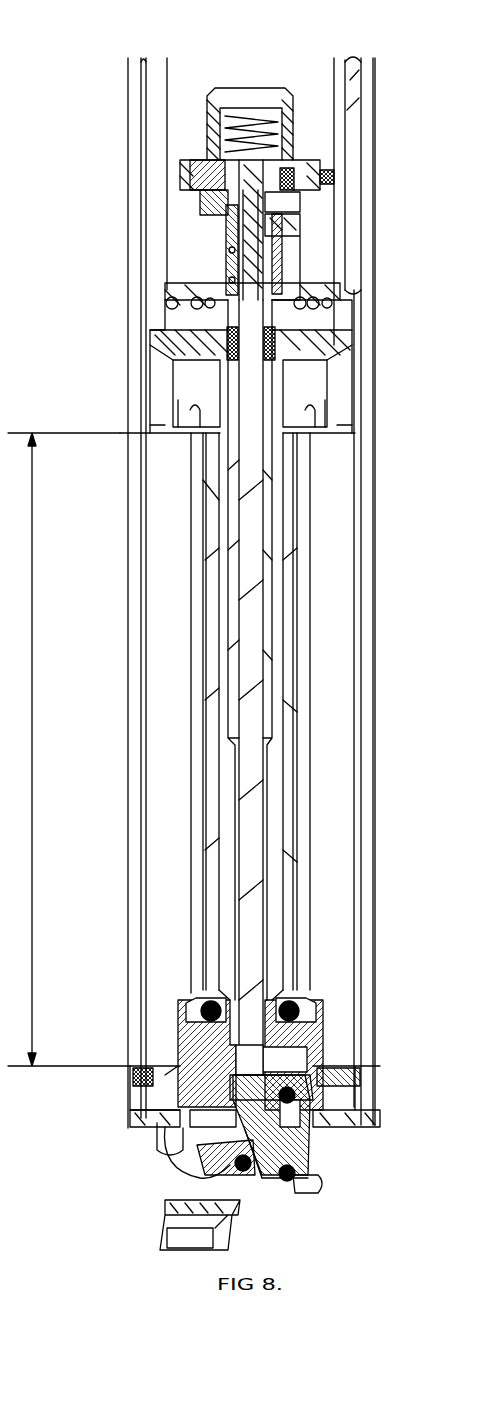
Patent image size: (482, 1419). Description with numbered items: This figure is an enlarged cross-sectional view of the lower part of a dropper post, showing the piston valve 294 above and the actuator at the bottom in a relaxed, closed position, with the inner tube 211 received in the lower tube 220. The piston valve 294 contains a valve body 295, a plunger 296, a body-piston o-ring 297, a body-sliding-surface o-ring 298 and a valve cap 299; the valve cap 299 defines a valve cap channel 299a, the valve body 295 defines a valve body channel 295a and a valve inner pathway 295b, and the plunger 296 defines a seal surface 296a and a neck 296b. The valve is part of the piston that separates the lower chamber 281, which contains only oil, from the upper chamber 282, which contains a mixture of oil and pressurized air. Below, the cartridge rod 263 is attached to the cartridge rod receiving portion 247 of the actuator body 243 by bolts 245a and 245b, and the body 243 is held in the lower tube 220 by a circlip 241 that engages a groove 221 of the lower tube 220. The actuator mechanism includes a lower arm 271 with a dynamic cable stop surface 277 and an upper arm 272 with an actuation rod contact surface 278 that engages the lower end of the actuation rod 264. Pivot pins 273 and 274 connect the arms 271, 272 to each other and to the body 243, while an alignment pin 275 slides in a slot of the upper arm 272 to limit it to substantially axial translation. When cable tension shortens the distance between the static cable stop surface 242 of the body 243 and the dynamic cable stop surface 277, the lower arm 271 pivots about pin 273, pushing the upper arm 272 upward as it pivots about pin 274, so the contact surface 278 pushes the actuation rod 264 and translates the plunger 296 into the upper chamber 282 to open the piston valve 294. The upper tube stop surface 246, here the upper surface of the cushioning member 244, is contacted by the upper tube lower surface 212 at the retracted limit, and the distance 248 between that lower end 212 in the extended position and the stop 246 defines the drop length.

The outer housing 211 is at (345, 62).
The upper tube lower surface 212 is at (340, 427).
The lower tube 220 is at (373, 807).
The groove 221 is at (363, 1113).
The circlip 241 is at (373, 1120).
The static cable stop surface 242 is at (185, 1228).
The body 243 is at (318, 1044).
The cushioning member 244 is at (155, 1080).
The bolt 245a is at (206, 1003).
The bolt 245b is at (290, 1010).
The upper tube stop surface 246 is at (178, 1070).
The cartridge rod receiving portion 247 is at (287, 993).
The distance 248 is at (69, 749).
The cartridge rod 263 is at (283, 672).
The actuation rod 264 is at (262, 606).
The lower arm 271 is at (260, 1188).
The upper arm 272 is at (310, 1143).
The pivot pin 273 is at (243, 1170).
The pivot pin 274 is at (298, 1180).
The alignment pin 275 is at (293, 1097).
The dynamic cable stop surface 277 is at (178, 1150).
The actuation rod contact surface 278 is at (273, 1075).
The lower chamber 281 is at (190, 255).
The upper chamber 282 is at (185, 106).
The piston valve 294 is at (270, 74).
The valve body 295 is at (298, 200).
The valve body channel 295a is at (298, 205).
The valve inner pathway 295b is at (236, 222).
The plunger 296 is at (268, 298).
The seal surface 296a is at (237, 173).
The neck 296b is at (243, 218).
The body-piston o-ring 297 is at (290, 185).
The body-sliding-surface o-ring 298 is at (334, 178).
The valve cap 299 is at (212, 92).
The valve cap channel 299a is at (292, 152).